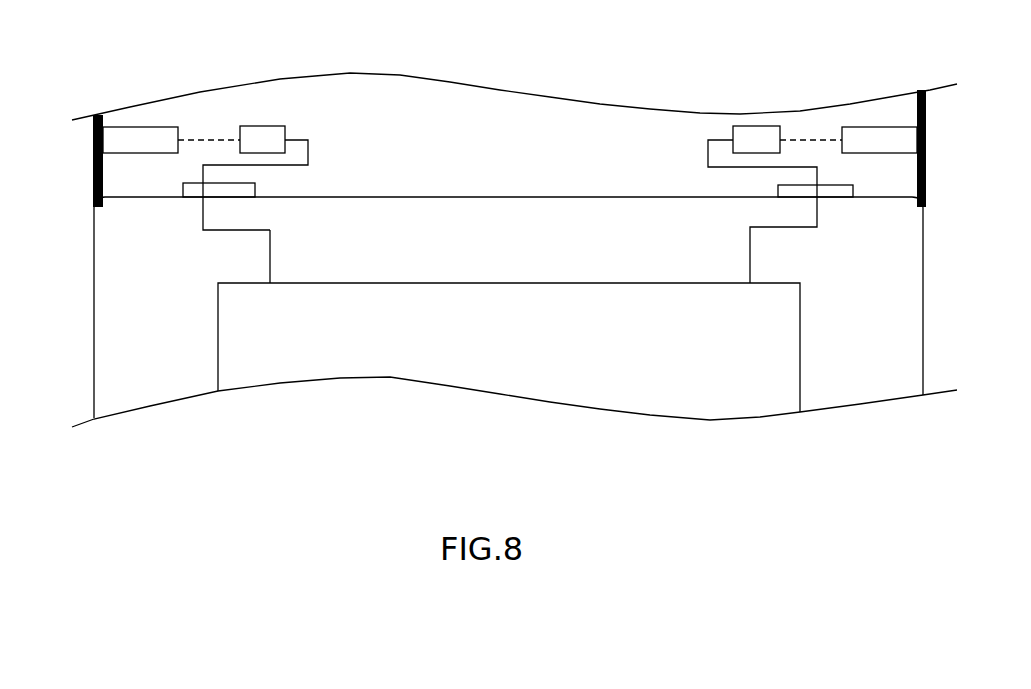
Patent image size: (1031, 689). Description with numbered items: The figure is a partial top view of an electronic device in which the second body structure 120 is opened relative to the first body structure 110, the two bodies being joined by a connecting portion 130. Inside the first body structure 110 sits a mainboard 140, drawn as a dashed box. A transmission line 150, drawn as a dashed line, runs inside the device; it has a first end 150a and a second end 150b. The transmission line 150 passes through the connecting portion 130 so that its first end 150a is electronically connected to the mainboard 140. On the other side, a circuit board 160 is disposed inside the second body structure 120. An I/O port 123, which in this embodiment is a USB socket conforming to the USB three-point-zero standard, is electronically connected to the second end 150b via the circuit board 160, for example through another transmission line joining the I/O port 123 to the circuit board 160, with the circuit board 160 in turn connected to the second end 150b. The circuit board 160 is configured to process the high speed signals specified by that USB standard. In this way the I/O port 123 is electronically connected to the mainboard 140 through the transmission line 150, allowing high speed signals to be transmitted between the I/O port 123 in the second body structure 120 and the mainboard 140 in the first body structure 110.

The first body structure 110 is at (915, 285).
The second body structure 120 is at (905, 107).
The I/O port 123 is at (143, 126).
The connecting portion 130 is at (188, 190).
The mainboard 140 is at (800, 378).
The transmission line 150 is at (203, 222).
The first end 150a is at (262, 278).
The second end 150b is at (295, 132).
The circuit board 160 is at (253, 125).